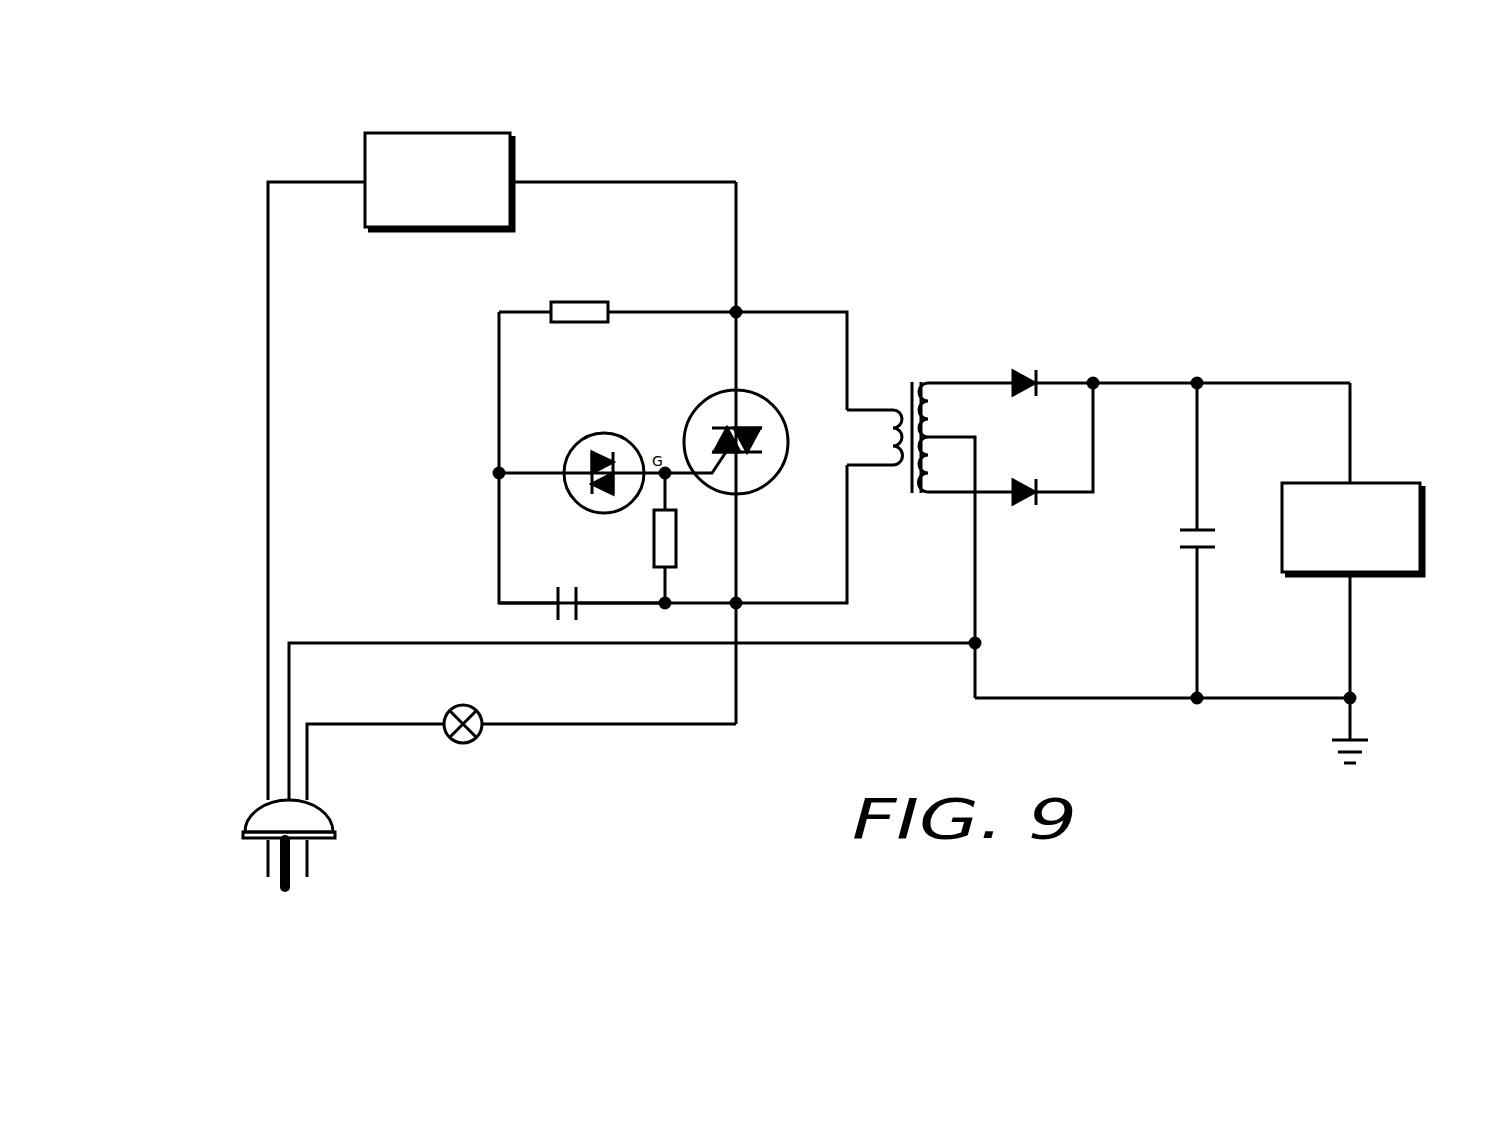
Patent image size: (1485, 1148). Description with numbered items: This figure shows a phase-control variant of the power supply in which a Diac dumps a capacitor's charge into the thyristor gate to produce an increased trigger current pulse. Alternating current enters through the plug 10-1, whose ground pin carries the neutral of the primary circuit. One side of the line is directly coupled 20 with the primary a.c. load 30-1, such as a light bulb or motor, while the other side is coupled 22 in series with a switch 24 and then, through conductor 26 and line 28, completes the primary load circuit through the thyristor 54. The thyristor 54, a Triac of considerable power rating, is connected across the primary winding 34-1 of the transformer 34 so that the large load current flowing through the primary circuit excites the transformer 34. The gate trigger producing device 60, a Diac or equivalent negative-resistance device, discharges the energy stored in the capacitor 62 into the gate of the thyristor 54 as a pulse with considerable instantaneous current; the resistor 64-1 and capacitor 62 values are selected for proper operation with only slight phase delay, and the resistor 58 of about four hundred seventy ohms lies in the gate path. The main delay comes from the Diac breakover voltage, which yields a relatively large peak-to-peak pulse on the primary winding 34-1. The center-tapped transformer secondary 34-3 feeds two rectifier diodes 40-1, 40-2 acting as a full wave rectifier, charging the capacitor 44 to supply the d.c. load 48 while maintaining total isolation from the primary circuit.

The plug 10-1 is at (246, 820).
The coupling 20 is at (264, 552).
The coupling 22 is at (325, 720).
The switch 24 is at (462, 703).
The conductor 26 is at (560, 720).
The line 28 is at (740, 256).
The primary a.c. load 30-1 is at (515, 150).
The transformer 34 is at (921, 376).
The primary winding 34-1 is at (882, 446).
The transformer secondary 34-3 is at (952, 406).
The rectifier diode 40-1 is at (1052, 372).
The rectifier diode 40-2 is at (1044, 518).
The capacitor 44 is at (1226, 528).
The d.c. load 48 is at (1412, 482).
The thyristor 54 is at (728, 390).
The resistor 58 is at (684, 546).
The thyristor gate trigger producing device 60 is at (583, 440).
The capacitor 62 is at (557, 584).
The resistor 64-1 is at (589, 300).